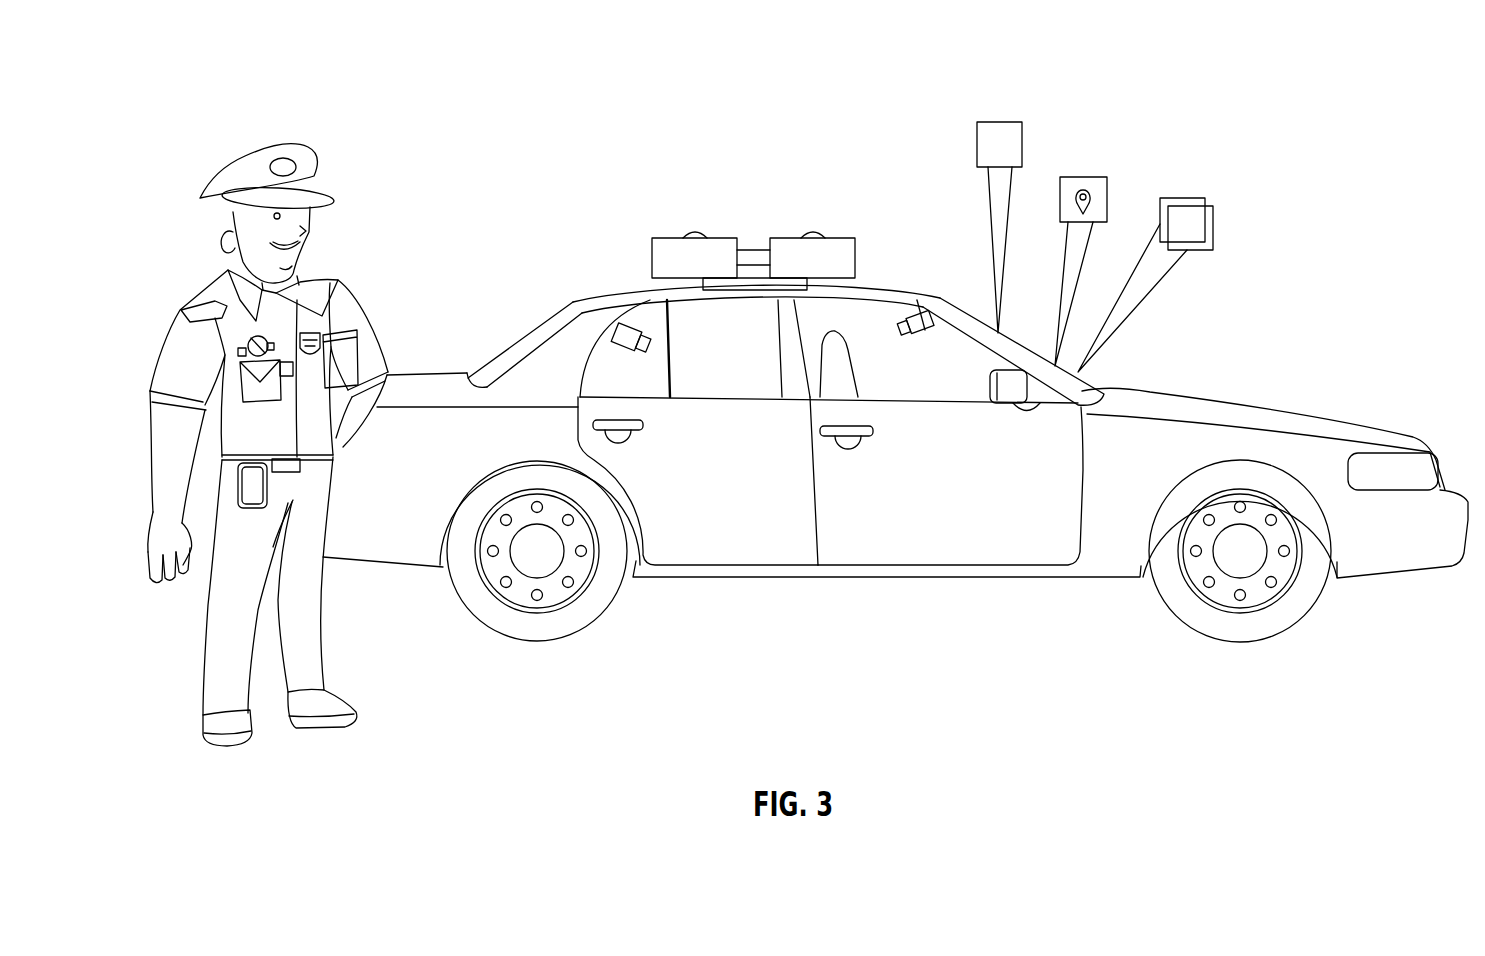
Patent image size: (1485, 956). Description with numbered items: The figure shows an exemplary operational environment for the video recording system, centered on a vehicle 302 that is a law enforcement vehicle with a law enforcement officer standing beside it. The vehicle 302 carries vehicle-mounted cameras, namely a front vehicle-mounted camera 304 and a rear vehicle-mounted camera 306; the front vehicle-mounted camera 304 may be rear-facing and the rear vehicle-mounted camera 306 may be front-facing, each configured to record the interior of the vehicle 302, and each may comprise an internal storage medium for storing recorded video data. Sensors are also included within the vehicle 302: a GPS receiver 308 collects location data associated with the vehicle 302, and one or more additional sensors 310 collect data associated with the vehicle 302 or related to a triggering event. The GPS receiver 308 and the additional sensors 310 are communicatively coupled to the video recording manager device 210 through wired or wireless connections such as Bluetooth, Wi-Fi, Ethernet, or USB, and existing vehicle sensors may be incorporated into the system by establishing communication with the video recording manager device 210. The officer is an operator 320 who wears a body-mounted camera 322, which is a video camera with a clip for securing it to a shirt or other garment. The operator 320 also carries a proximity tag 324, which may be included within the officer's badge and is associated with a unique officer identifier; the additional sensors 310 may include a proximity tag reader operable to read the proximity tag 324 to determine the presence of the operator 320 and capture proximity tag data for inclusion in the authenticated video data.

The vehicle 302 is at (1338, 419).
The front vehicle-mounted camera 304 is at (912, 312).
The rear vehicle-mounted camera 306 is at (624, 333).
The GPS receiver 308 is at (1082, 177).
The additional sensors 310 is at (1186, 205).
The video recording manager device 210 is at (1000, 122).
The operator 320 is at (247, 150).
The body-mounted camera 322 is at (245, 350).
The proximity tag 324 is at (318, 328).